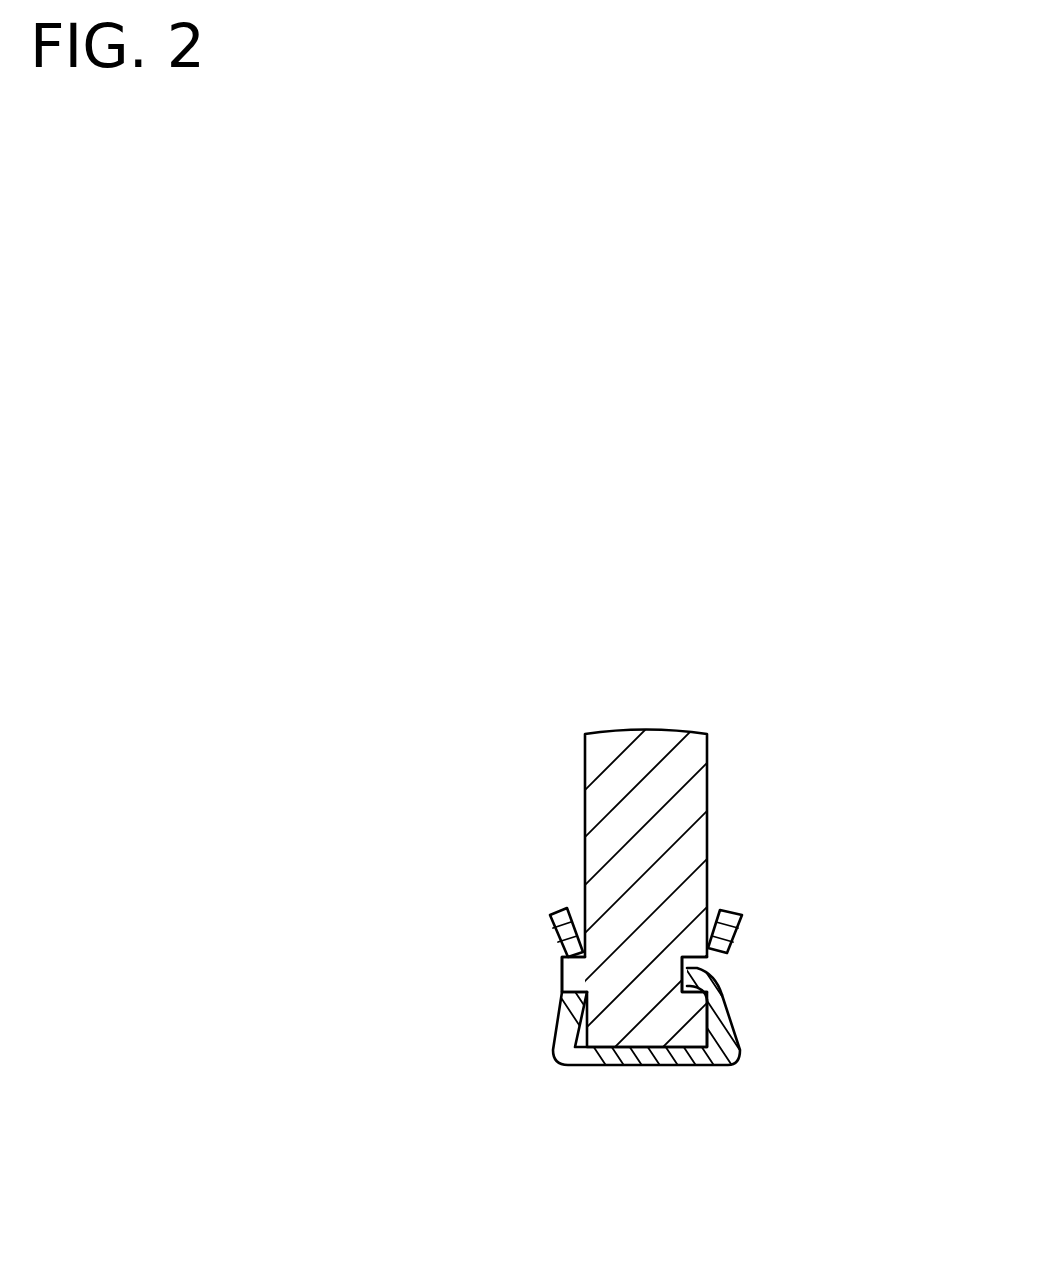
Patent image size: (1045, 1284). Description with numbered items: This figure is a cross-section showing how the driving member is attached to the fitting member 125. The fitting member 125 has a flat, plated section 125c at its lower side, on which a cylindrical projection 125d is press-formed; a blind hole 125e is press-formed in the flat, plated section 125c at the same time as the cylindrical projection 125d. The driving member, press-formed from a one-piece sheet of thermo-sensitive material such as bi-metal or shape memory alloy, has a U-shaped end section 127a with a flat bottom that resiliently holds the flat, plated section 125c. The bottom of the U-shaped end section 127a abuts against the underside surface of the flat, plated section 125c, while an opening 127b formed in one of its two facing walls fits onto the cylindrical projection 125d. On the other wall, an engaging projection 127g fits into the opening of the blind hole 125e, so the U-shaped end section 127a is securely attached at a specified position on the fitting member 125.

The fitting member 125 is at (657, 842).
The flat, plated section 125c is at (680, 813).
The cylindrical projection 125d is at (557, 987).
The blind hole 125e is at (707, 960).
The U-shaped end section 127a is at (685, 1067).
The opening 127b is at (560, 968).
The engaging projection 127g is at (713, 973).